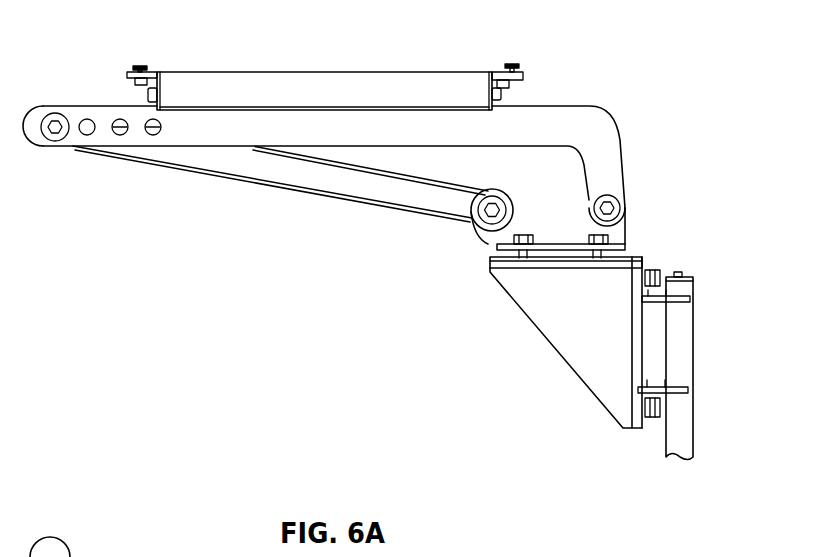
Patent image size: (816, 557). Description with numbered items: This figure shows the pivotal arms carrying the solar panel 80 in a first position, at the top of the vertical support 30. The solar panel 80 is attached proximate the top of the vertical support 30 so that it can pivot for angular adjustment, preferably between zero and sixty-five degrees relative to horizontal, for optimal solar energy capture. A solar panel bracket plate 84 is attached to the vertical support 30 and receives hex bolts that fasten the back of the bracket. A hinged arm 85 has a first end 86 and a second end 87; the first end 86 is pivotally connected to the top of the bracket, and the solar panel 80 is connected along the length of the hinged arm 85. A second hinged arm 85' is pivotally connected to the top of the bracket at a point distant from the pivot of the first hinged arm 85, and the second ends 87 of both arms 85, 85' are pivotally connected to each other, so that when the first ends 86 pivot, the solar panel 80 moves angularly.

The vertical support 30 is at (695, 423).
The solar panel 80 is at (262, 72).
The solar panel bracket plate 84 is at (645, 262).
The hinged arm 85 is at (324, 125).
The second hinged arm 85' is at (280, 205).
The first end 86 is at (617, 208).
The second end 87 is at (55, 120).